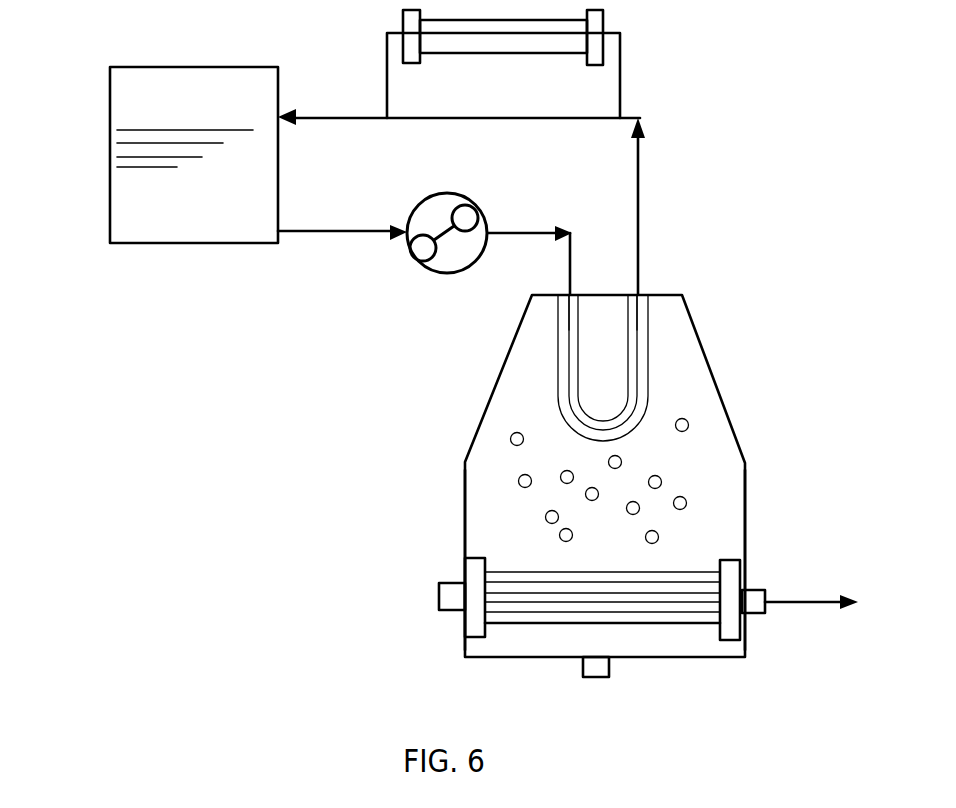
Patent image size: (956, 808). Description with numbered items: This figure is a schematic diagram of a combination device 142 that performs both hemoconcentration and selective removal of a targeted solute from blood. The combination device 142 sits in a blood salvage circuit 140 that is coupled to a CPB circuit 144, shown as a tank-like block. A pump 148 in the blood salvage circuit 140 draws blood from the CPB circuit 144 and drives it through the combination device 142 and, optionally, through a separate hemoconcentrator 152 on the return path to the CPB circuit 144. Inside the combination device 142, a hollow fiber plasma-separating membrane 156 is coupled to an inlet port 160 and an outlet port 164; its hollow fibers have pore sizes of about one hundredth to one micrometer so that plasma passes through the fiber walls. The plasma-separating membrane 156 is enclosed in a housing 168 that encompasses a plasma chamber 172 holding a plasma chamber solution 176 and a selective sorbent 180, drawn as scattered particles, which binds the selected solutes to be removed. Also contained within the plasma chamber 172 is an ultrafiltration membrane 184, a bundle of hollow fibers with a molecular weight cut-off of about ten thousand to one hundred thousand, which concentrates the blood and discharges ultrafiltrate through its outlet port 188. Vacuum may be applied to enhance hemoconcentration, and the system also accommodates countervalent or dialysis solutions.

The blood salvage circuit 140 is at (437, 297).
The combination device 142 is at (752, 538).
The CPB circuit 144 is at (108, 212).
The pump 148 is at (462, 194).
The hemoconcentrator 152 is at (507, 54).
The hollow fiber plasma-separating membrane 156 is at (649, 346).
The inlet port 160 is at (575, 294).
The outlet port 164 is at (640, 294).
The housing 168 is at (745, 505).
The plasma chamber 172 is at (670, 393).
The plasma chamber solution 176 is at (465, 528).
The selective sorbent 180 is at (696, 488).
The ultrafiltration membrane 184 is at (564, 634).
The outlet port 188 is at (757, 614).